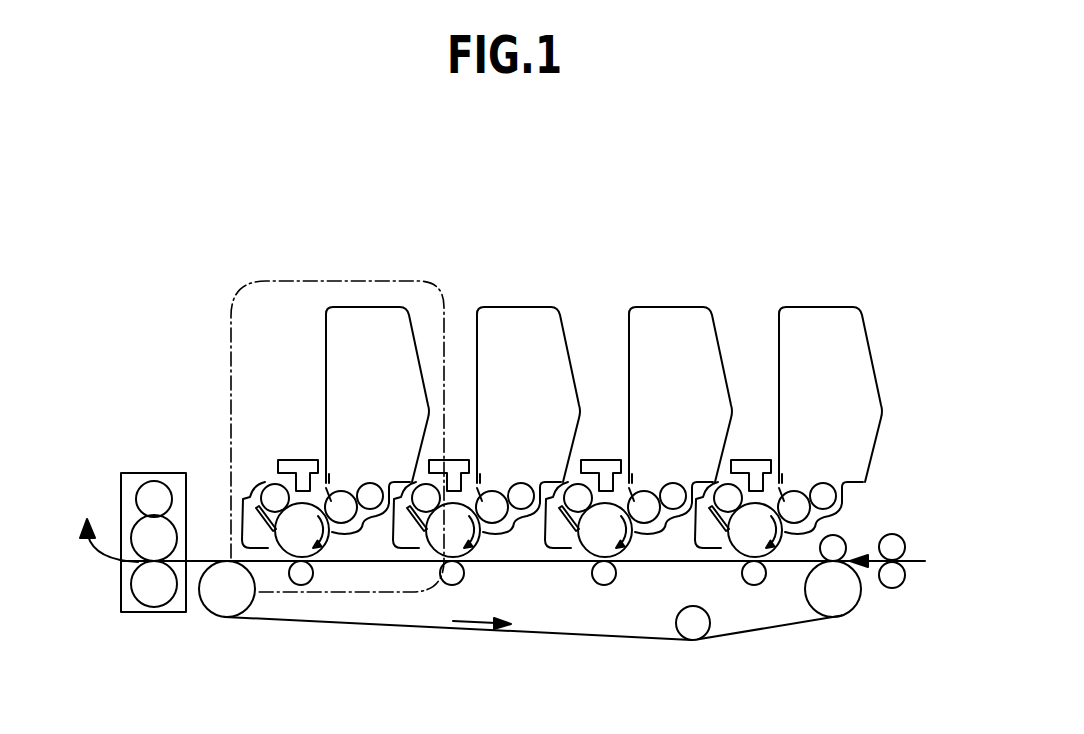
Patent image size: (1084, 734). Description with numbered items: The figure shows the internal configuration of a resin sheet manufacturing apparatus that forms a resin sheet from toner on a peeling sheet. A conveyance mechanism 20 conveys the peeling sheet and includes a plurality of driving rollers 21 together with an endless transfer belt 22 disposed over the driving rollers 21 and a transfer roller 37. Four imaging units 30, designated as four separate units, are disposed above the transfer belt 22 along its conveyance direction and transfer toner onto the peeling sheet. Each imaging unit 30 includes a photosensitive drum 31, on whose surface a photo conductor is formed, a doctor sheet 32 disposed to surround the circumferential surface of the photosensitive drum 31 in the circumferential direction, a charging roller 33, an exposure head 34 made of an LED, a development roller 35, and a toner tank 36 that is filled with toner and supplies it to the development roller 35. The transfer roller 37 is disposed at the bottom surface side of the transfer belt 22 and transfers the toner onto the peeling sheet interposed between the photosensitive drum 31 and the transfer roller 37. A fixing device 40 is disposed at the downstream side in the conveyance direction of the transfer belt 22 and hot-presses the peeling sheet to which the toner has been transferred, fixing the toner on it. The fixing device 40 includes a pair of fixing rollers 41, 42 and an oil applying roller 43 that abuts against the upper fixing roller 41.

The conveyance mechanism 20 is at (560, 640).
The driving rollers 21 is at (215, 607).
The transfer belt 22 is at (390, 627).
The imaging units 30 is at (578, 424).
The photosensitive drum 31 is at (737, 547).
The doctor sheet 32 is at (717, 525).
The charging roller 33 is at (717, 482).
The exposure head 34 is at (755, 460).
The development roller 35 is at (790, 497).
The toner tank 36 is at (870, 347).
The transfer roller 37 is at (755, 582).
The fixing device 40 is at (155, 617).
The upper fixing roller 41 is at (136, 531).
The fixing roller 42 is at (137, 585).
The oil applying roller 43 is at (153, 482).